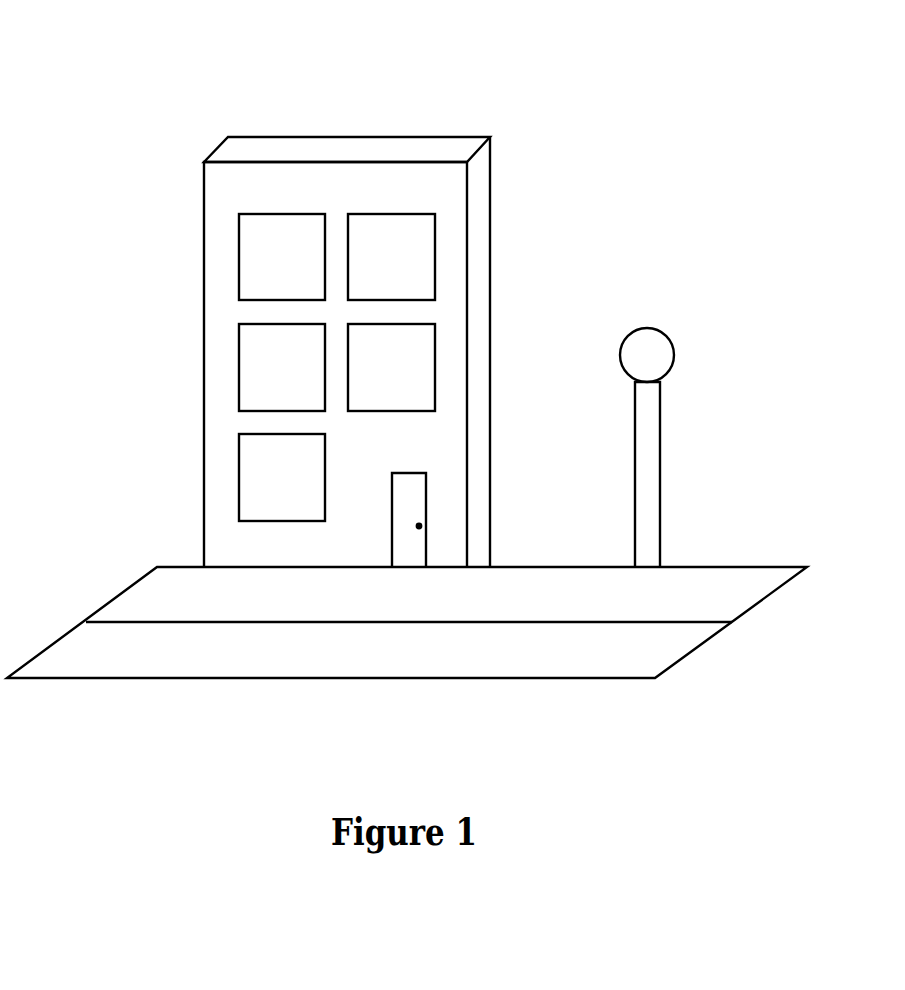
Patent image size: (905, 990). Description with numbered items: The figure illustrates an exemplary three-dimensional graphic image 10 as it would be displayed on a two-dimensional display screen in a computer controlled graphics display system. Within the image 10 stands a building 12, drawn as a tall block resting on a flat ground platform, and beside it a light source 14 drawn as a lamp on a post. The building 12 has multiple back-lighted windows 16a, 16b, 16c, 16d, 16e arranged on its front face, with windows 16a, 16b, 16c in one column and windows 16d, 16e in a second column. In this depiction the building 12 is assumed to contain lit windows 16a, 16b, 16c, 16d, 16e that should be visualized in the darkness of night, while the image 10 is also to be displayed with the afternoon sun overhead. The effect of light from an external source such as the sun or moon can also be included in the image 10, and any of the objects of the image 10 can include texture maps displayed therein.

The three-dimensional graphic image 10 is at (121, 26).
The building 12 is at (483, 250).
The light source 14 is at (668, 350).
The back-lighted window 16a is at (282, 257).
The back-lighted window 16b is at (282, 367).
The back-lighted window 16c is at (282, 477).
The back-lighted window 16d is at (391, 257).
The back-lighted window 16e is at (391, 367).